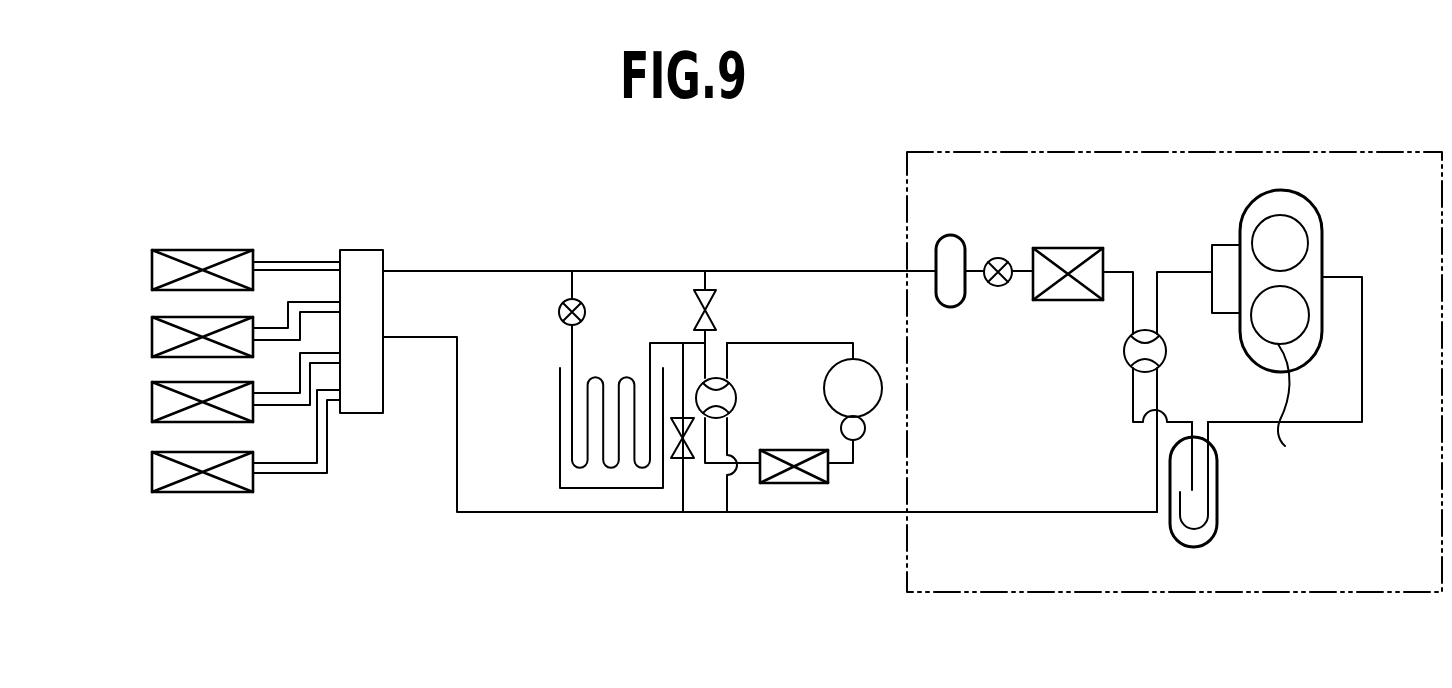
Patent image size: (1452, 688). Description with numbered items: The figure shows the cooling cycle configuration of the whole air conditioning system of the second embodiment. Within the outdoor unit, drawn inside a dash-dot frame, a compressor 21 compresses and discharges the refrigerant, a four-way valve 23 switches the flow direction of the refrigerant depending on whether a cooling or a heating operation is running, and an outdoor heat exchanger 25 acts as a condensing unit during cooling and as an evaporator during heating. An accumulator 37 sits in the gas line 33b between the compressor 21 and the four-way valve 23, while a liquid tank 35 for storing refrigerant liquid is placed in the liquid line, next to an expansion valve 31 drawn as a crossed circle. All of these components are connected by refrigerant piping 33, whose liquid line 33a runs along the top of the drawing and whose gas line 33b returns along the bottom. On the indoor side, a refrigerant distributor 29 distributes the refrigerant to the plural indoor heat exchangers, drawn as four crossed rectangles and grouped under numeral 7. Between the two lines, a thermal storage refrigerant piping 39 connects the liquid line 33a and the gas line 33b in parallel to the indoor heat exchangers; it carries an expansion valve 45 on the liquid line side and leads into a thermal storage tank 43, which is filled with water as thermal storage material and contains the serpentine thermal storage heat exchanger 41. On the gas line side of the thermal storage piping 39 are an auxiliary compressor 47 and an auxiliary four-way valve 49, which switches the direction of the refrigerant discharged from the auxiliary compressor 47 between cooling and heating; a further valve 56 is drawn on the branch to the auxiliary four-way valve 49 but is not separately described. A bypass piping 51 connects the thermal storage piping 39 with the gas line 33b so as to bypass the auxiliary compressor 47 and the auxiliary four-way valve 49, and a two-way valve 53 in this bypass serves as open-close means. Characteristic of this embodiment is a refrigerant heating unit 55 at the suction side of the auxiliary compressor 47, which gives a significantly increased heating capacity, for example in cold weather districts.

The indoor heat exchangers 7 is at (150, 272).
The refrigerant distributor 29 is at (353, 250).
The refrigerant piping 33 is at (770, 416).
The liquid line 33a is at (447, 271).
The gas line 33b is at (483, 512).
The expansion valve 45 is at (560, 303).
The thermal storage refrigerant piping 39 is at (568, 345).
The thermal storage heat exchanger 41 is at (627, 377).
The thermal storage tank 43 is at (560, 460).
The bypass piping 51 is at (683, 485).
The 2-way valve 53 is at (680, 458).
The valve 56 is at (717, 303).
The auxiliary 4-way valve 49 is at (736, 400).
The auxiliary compressor 47 is at (860, 361).
The refrigerant heating unit 55 is at (807, 483).
The liquid tank 35 is at (950, 235).
The expansion valve 31 is at (998, 257).
The outdoor heat exchanger 25 is at (1107, 258).
The 4-way valve 23 is at (1123, 350).
The compressor 21 is at (1315, 200).
The accumulator 37 is at (1212, 538).